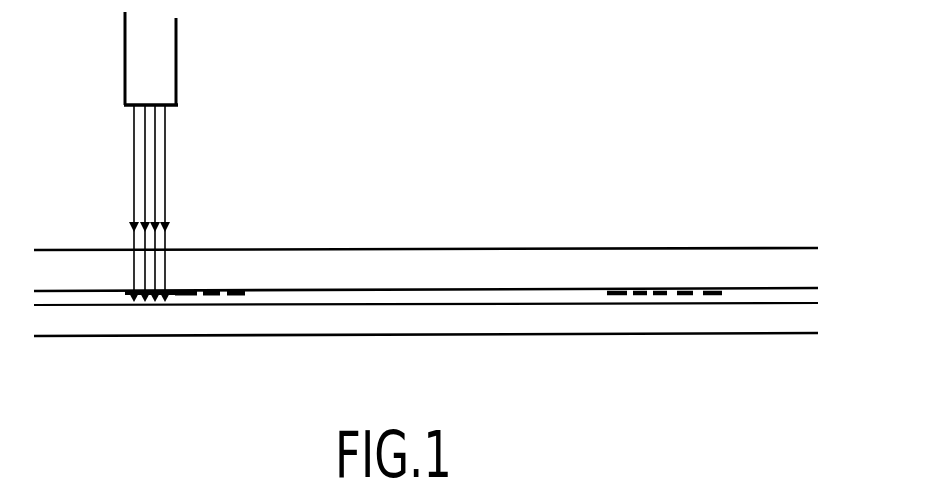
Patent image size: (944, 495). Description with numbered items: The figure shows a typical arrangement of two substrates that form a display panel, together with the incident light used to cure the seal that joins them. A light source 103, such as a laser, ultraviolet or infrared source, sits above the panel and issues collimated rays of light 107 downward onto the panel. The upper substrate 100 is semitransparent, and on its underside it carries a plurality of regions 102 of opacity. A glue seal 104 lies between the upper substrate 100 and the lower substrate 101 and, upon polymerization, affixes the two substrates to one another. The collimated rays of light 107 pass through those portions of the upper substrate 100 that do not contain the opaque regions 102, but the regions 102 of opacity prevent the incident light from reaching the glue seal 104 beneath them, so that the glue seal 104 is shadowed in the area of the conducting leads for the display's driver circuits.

The upper substrate 100 is at (457, 248).
The lower substrate 101 is at (487, 333).
The regions of opacity 102 is at (237, 290).
The light source 103 is at (178, 67).
The glue seal 104 is at (560, 288).
The collimated rays of light 107 is at (173, 225).